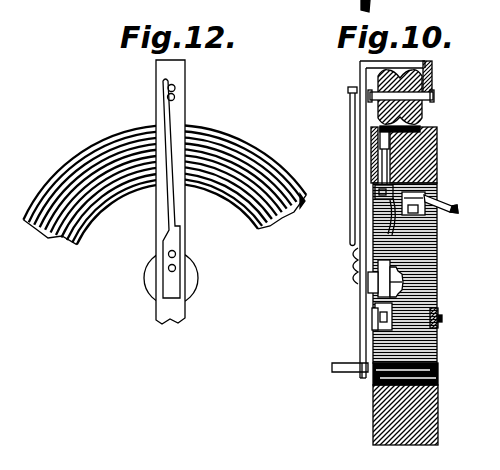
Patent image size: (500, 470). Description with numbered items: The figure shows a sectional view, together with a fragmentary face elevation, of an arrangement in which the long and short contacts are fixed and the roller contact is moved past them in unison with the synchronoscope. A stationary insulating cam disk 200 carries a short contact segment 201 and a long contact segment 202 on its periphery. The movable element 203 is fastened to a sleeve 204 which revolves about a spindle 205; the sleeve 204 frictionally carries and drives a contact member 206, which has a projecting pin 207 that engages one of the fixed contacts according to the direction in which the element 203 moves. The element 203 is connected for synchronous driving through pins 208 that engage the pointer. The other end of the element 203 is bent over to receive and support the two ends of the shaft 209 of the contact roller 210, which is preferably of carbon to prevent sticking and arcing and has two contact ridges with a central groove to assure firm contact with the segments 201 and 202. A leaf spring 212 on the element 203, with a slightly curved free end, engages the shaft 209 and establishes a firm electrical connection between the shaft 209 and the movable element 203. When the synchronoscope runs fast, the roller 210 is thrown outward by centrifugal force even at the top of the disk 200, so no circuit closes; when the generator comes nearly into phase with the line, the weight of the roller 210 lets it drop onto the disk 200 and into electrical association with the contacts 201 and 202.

In FIG. 10, the insulating cam disk 200 is at (385, 170).
In FIG. 10, the short contact segment 201 is at (447, 124).
In FIG. 10, the long contact segment 202 is at (381, 146).
In FIG. 12, the movable element 203 is at (174, 131).
In FIG. 10, the movable element 203 is at (362, 216).
In FIG. 10, the sleeve 204 is at (377, 265).
In FIG. 10, the spindle 205 is at (373, 302).
In FIG. 12, the contact member 206 is at (147, 284).
In FIG. 10, the contact member 206 is at (384, 280).
In FIG. 10, the projecting pin 207 is at (376, 332).
In FIG. 10, the pins 208 is at (334, 365).
In FIG. 10, the shaft 209 is at (372, 97).
In FIG. 12, the contact roller 210 is at (35, 188).
In FIG. 10, the contact roller 210 is at (441, 59).
In FIG. 12, the leaf spring 212 is at (162, 113).
In FIG. 10, the leaf spring 212 is at (350, 113).